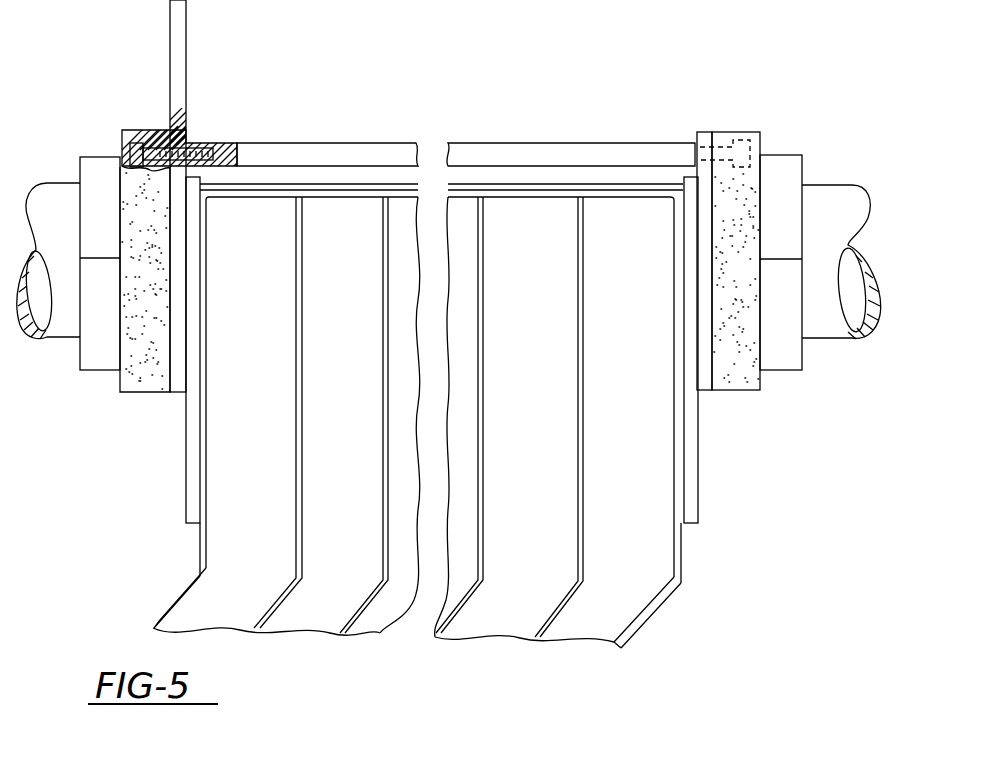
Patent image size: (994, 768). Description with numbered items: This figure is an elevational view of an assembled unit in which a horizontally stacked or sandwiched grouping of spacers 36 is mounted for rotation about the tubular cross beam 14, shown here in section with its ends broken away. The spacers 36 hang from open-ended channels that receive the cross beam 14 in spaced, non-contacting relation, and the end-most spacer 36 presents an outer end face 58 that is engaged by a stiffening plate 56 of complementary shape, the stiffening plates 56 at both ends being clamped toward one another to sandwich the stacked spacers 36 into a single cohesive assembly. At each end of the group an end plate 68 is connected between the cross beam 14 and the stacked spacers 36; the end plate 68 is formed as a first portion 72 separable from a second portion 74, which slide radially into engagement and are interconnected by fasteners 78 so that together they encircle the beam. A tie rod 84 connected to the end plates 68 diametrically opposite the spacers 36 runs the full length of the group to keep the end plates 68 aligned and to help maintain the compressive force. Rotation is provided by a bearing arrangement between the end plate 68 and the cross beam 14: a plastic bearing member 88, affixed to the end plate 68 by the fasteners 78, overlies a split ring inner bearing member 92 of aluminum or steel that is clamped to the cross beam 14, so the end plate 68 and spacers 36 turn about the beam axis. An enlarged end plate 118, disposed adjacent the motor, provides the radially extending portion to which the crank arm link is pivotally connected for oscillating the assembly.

The tubular cross beam 14 is at (832, 183).
The spacer 36 is at (645, 563).
The stiffening plate 56 is at (165, 617).
The outer end face 58 is at (212, 553).
The end plate 68 is at (187, 503).
The first portion 72 is at (170, 127).
The second portion 74 is at (187, 470).
The fastener 78 is at (128, 153).
The tie rod 84 is at (517, 142).
The plastic bearing member 88 is at (148, 373).
The split ring inner bearing member 92 is at (100, 360).
The enlarged end plate 118 is at (186, 62).